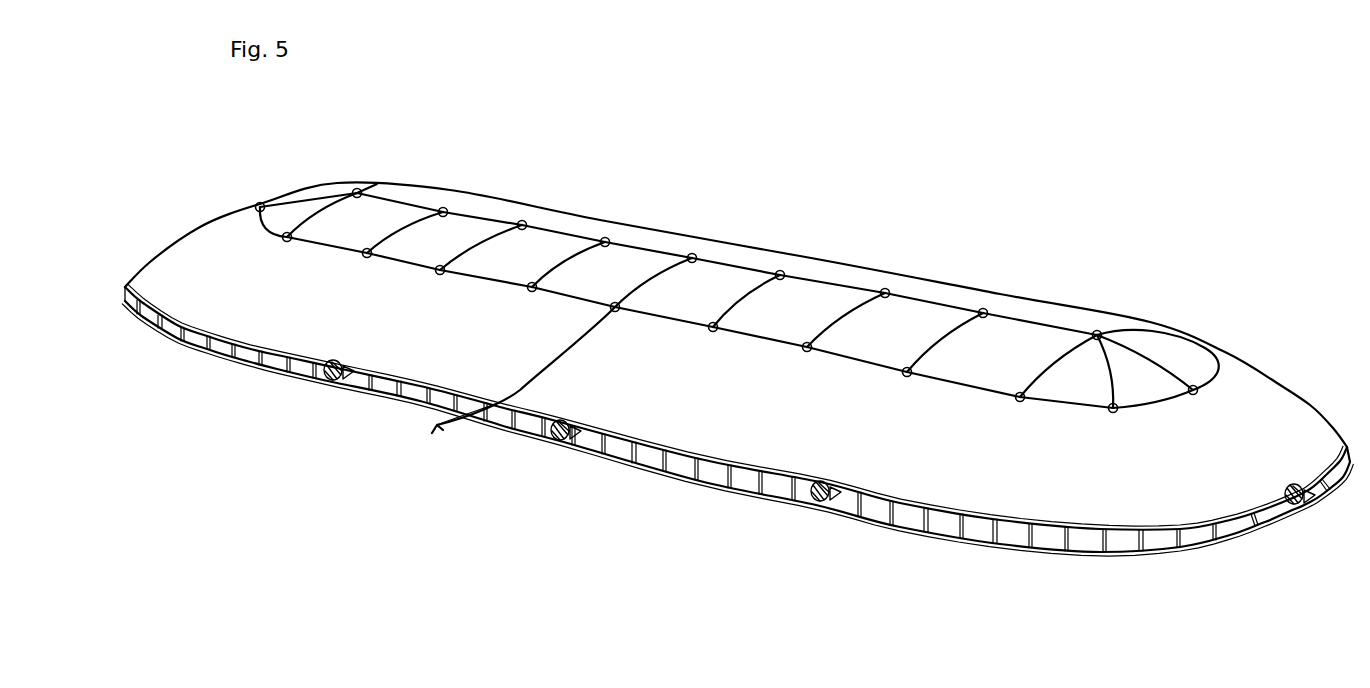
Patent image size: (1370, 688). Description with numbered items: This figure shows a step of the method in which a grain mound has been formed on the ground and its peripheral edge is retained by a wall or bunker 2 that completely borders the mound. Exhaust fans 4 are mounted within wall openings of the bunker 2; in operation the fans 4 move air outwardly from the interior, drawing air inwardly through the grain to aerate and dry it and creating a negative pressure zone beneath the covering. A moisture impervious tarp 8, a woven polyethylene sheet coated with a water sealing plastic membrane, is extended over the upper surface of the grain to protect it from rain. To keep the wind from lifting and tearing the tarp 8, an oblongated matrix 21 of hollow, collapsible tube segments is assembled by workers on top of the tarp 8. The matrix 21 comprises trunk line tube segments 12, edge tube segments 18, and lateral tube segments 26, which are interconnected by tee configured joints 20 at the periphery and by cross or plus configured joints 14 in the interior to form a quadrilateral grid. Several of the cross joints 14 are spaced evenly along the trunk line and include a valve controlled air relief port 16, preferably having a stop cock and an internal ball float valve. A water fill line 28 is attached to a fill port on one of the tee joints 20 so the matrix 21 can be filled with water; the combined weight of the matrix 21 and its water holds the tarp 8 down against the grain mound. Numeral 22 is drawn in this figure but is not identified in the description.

The bunker 2 is at (198, 339).
The exhaust fan 4 is at (318, 376).
The tarp 8 is at (170, 267).
The trunk line tube segment 12 is at (488, 215).
The cross configured joint 14 is at (983, 313).
The air relief port 16 is at (692, 258).
The edge tube segment 18 is at (743, 338).
The tee configured joint 20 is at (260, 207).
The matrix 21 is at (1153, 322).
The knot 22 is at (357, 193).
The lateral tube segment 26 is at (903, 290).
The fill tube 28 is at (518, 388).